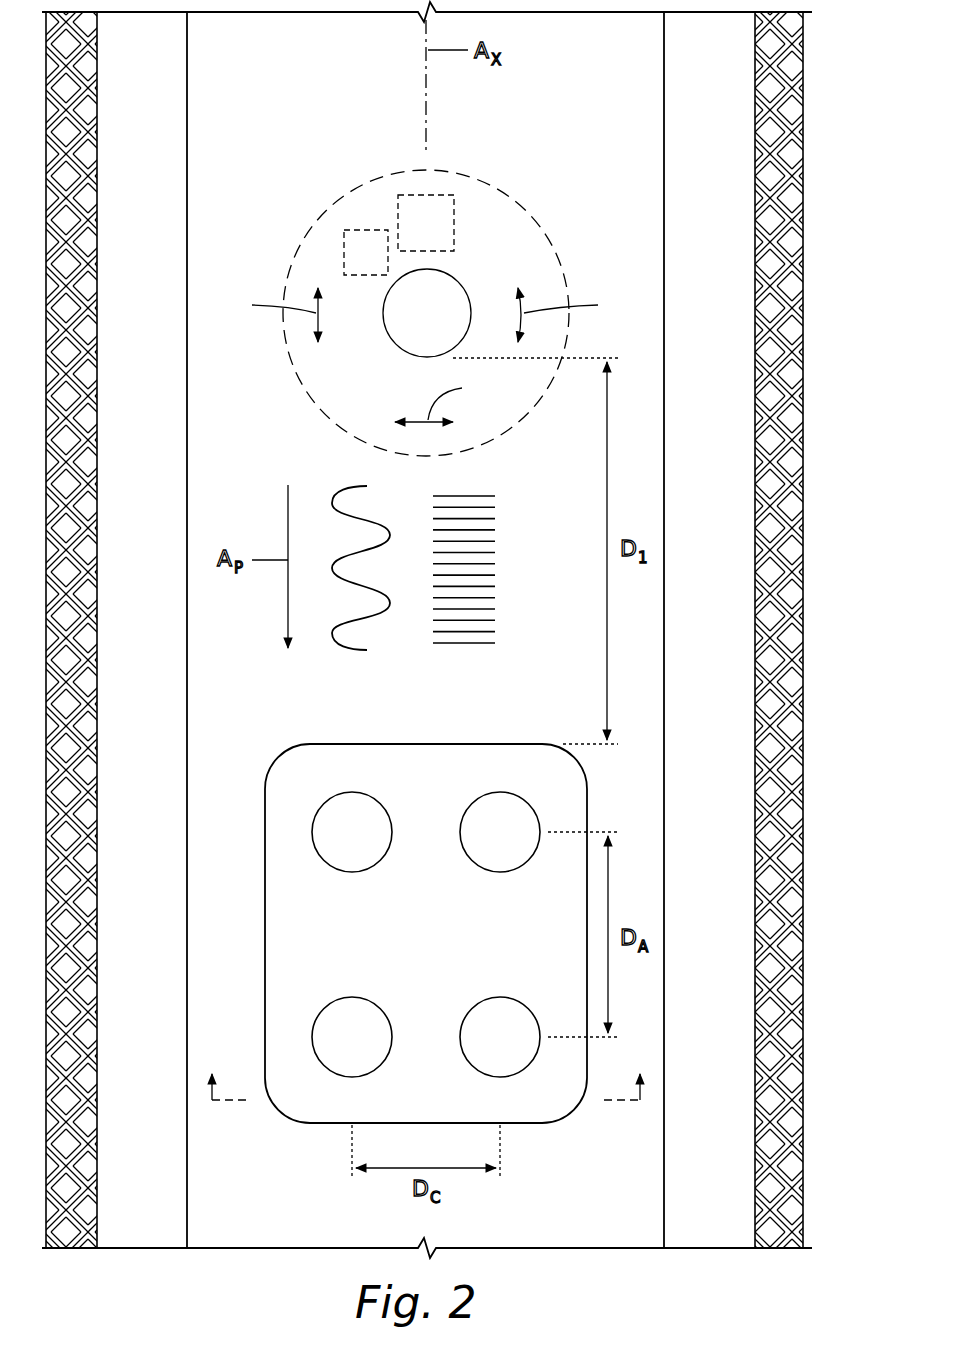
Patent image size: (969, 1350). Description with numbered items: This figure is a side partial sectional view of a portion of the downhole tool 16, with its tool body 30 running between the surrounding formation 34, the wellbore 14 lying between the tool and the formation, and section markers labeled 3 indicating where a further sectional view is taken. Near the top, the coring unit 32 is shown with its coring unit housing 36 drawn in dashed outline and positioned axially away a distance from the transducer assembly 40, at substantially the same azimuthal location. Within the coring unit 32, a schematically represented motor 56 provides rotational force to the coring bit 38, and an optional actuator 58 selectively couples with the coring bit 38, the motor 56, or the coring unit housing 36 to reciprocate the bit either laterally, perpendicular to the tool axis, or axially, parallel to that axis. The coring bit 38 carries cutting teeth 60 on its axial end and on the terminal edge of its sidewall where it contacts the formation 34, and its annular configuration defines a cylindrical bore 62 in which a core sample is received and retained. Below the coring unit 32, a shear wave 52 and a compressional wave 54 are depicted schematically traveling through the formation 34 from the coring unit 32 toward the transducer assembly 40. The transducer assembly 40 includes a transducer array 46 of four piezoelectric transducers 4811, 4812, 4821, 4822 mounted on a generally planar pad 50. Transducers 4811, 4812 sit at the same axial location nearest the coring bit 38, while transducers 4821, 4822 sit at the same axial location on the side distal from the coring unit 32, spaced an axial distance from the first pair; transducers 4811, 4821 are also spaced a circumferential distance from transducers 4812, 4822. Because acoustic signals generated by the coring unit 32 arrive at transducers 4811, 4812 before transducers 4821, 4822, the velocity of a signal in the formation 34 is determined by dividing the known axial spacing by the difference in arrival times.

The wellbore 14 is at (718, 381).
The downhole tool 16 is at (710, 91).
The tool body 30 is at (666, 692).
The coring unit 32 is at (421, 289).
The formation 34 is at (795, 541).
The coring unit housing 36 is at (470, 172).
The coring bit 38 is at (432, 303).
The transducer assembly 40 is at (395, 936).
The transducer array 46 is at (372, 934).
The transducer 4811 is at (350, 848).
The transducer 4812 is at (500, 848).
The transducer 4821 is at (350, 1022).
The transducer 4822 is at (500, 1016).
The pad 50 is at (422, 744).
The shear wave 52 is at (320, 470).
The compressional wave 54 is at (494, 480).
The motor 56 is at (418, 193).
The actuator 58 is at (364, 230).
The cutting teeth 60 is at (403, 328).
The cylindrical bore 62 is at (368, 372).
The section line 3- 3 is at (426, 1070).